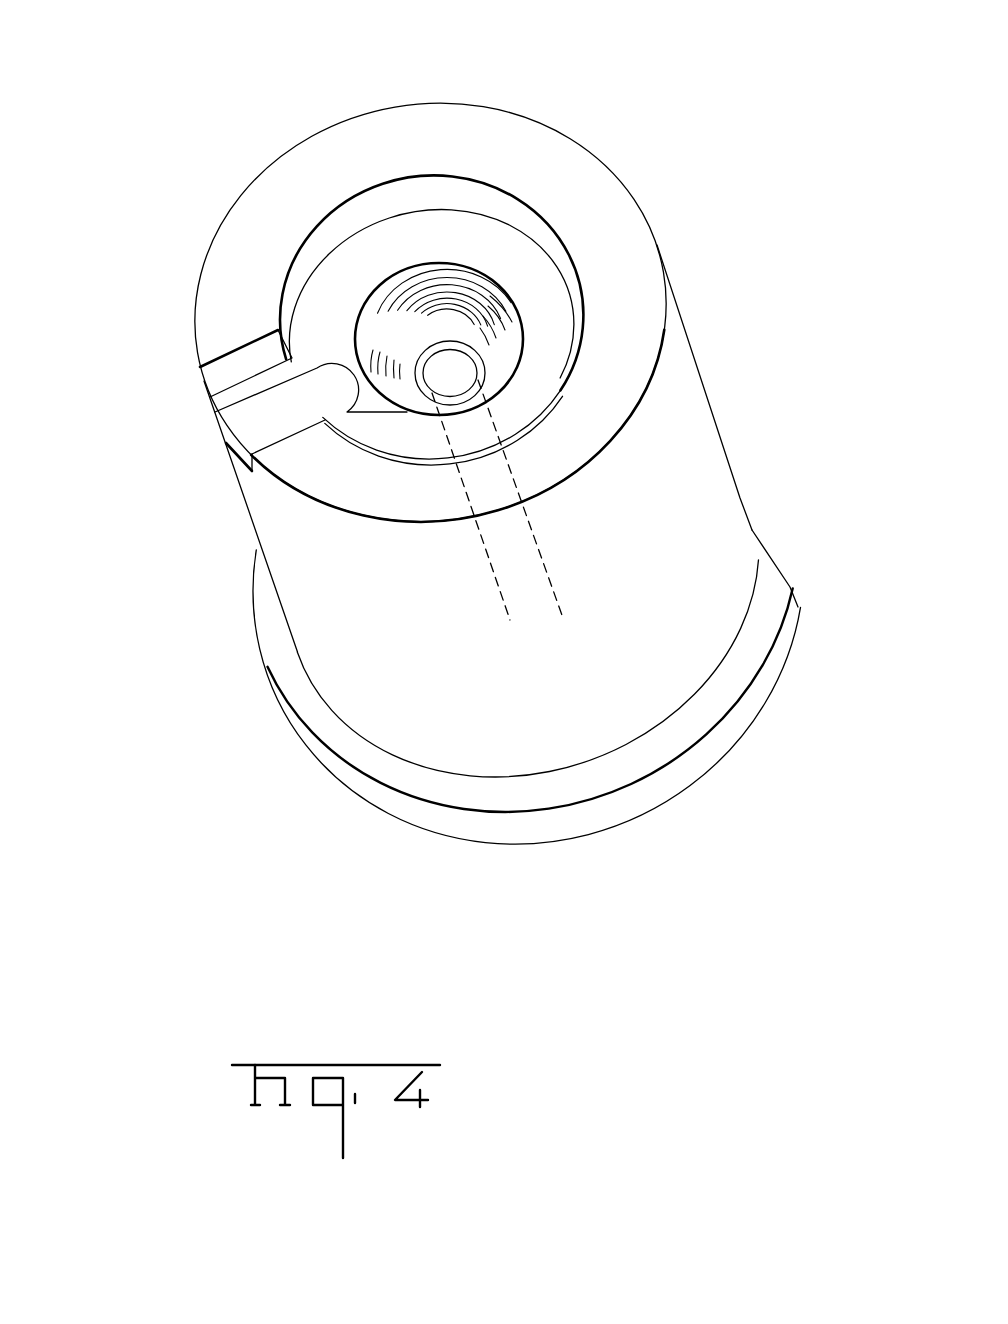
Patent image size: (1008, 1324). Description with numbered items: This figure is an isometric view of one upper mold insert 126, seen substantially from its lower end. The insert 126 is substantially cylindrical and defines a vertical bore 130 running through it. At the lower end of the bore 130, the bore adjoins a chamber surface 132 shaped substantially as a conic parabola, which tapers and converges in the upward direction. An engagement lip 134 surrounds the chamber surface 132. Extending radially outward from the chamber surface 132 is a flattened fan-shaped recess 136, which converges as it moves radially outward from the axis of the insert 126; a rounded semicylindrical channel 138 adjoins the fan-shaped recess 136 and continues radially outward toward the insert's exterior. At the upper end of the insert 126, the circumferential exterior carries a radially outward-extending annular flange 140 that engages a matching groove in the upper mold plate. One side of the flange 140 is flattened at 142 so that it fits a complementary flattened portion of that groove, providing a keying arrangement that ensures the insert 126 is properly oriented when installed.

The upper mold insert 126 is at (618, 178).
The vertical bore 130 is at (530, 517).
The chamber surface 132 is at (474, 297).
The engagement lip 134 is at (350, 217).
The fan-shaped recess 136 is at (343, 353).
The semicylindrical channel 138 is at (275, 418).
The annular flange 140 is at (618, 767).
The flattened side of flange 142 is at (775, 563).